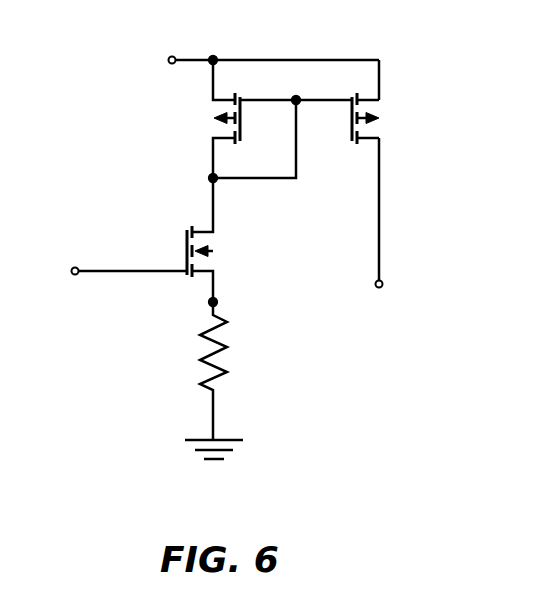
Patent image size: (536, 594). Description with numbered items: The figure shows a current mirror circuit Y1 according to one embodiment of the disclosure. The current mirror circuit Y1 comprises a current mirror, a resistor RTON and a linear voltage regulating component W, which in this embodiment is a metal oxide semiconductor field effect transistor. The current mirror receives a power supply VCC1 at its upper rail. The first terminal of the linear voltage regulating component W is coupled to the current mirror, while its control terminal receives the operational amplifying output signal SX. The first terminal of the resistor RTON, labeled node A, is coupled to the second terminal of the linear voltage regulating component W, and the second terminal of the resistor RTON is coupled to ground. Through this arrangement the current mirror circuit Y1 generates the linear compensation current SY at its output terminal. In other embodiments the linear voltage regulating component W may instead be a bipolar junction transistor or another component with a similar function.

The current mirror circuit Y1 is at (252, 52).
The linear voltage regulating component W is at (217, 240).
The node A is at (217, 302).
The resistor RTON is at (185, 371).
The operational amplifying output signal SX is at (110, 275).
The linear compensation current SY is at (378, 231).
The power supply VCC1 is at (162, 58).